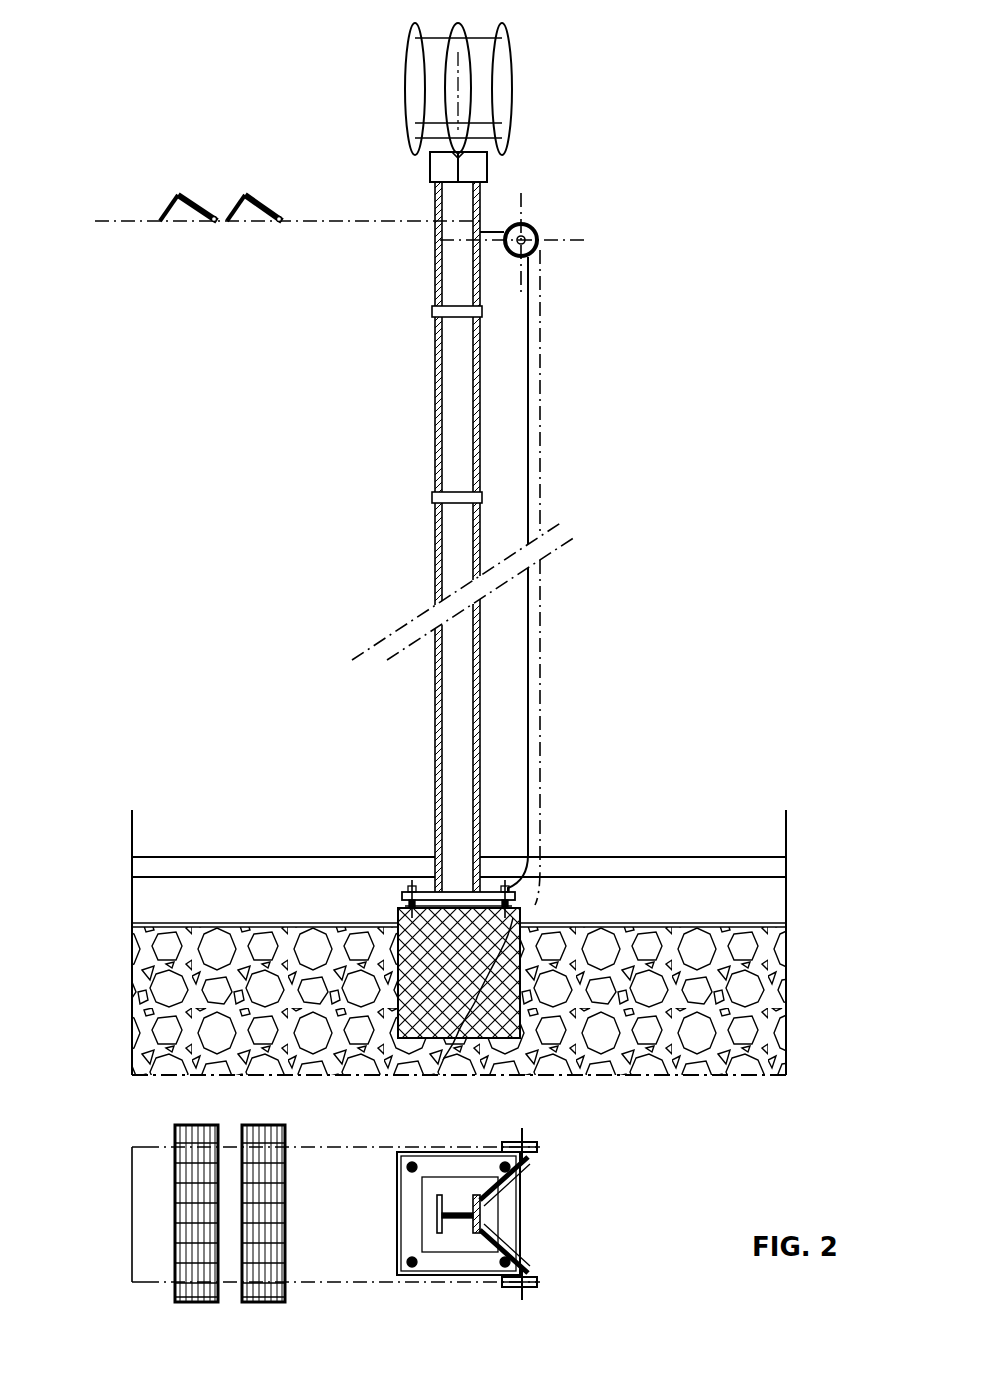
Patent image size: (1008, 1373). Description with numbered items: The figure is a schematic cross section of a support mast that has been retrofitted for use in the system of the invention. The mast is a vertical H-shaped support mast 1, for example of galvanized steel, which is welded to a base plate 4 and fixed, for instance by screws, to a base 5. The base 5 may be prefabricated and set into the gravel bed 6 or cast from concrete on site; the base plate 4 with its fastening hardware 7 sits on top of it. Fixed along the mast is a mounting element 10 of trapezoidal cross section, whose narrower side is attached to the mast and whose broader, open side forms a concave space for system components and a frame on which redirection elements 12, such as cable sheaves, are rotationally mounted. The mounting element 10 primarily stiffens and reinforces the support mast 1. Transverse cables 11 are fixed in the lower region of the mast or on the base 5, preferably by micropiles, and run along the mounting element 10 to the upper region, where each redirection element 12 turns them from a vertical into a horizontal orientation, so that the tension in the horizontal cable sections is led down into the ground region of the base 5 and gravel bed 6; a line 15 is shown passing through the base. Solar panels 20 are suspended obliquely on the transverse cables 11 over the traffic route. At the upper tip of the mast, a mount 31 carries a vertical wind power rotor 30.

The H-shaped support mast 1 is at (455, 392).
The base plate 4 is at (483, 895).
The base 5 is at (513, 916).
The gravel bed 6 is at (722, 950).
The base plate with anchor bolts 7 is at (412, 917).
The mounting element 10 is at (510, 404).
The transverse cables 11 is at (100, 221).
The redirection element 12 is at (538, 222).
The cable outlet 15 is at (470, 1003).
The solar panels 20 is at (255, 205).
The vertical wind power rotor 30 is at (505, 96).
The mount 31 is at (468, 166).